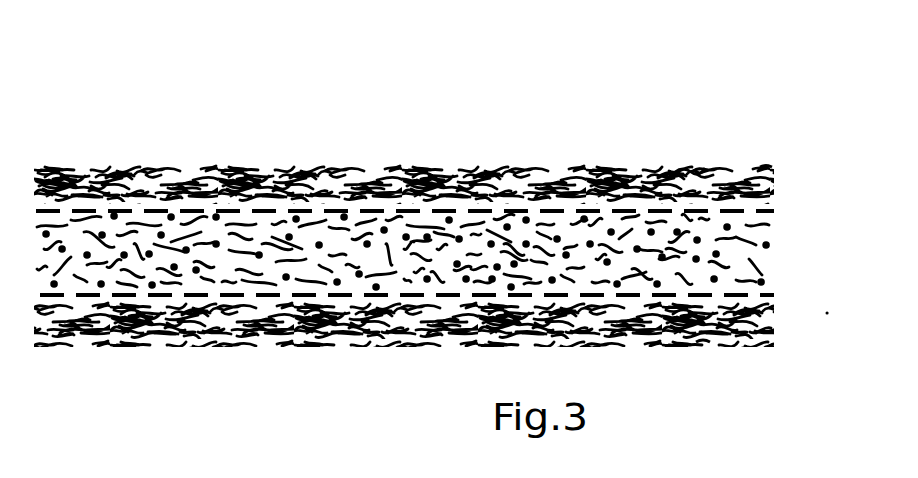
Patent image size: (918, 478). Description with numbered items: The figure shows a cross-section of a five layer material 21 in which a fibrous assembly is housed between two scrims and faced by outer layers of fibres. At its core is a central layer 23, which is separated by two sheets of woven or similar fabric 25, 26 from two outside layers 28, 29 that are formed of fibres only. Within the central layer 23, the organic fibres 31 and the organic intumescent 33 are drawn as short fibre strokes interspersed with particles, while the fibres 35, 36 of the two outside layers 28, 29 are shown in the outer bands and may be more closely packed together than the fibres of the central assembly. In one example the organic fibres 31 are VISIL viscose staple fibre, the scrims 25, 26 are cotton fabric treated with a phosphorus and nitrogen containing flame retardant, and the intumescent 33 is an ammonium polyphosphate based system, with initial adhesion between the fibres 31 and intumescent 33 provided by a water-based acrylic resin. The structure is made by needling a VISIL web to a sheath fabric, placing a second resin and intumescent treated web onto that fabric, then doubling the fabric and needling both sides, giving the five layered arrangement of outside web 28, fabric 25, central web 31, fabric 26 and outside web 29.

The five layer material 21 is at (139, 117).
The central layer 23 is at (268, 231).
The sheet of woven fabric 25 is at (494, 210).
The sheet of woven fabric 26 is at (310, 297).
The outside layer 28 is at (689, 168).
The outside layer 29 is at (160, 318).
The organic fibres 31 is at (755, 224).
The organic intumescent 33 is at (770, 262).
The fibres of the outside layer 35 is at (770, 166).
The fibres of the outside layer 36 is at (705, 341).